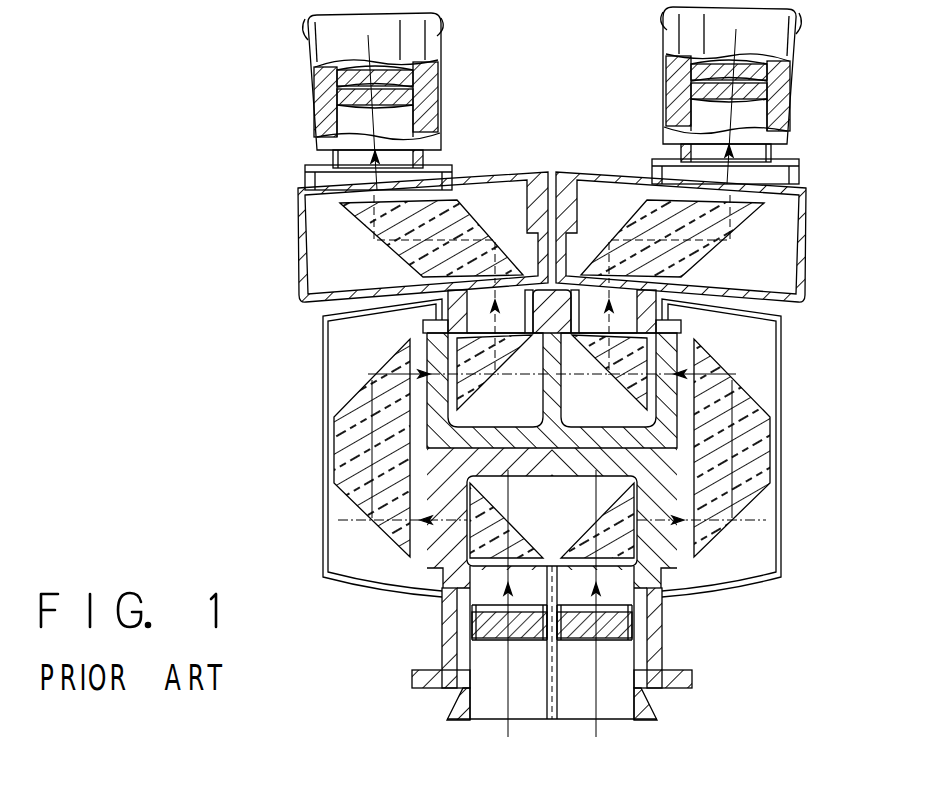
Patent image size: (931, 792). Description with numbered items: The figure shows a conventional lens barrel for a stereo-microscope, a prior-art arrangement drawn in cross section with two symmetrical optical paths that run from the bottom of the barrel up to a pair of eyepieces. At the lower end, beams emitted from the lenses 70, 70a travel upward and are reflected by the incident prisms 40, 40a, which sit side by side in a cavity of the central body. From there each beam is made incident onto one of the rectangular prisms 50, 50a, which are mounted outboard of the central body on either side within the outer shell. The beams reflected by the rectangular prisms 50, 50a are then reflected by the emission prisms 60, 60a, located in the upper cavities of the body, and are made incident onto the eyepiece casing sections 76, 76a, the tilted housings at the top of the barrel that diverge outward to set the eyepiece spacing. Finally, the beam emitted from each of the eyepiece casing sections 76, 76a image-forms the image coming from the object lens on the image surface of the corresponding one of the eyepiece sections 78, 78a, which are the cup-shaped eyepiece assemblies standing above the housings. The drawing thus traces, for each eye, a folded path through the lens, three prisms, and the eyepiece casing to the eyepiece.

The eyepiece section 78 is at (309, 110).
The eyepiece section 78a is at (783, 118).
The eyepiece casing section 76 is at (297, 239).
The eyepiece casing section 76a is at (802, 229).
The emission prism 60 is at (432, 330).
The emission prism 60a is at (693, 325).
The rectangular prism 50 is at (340, 458).
The rectangular prism 50a is at (764, 458).
The incident prism 40 is at (428, 568).
The incident prism 40a is at (676, 568).
The lens 70 is at (444, 660).
The lens 70a is at (660, 660).